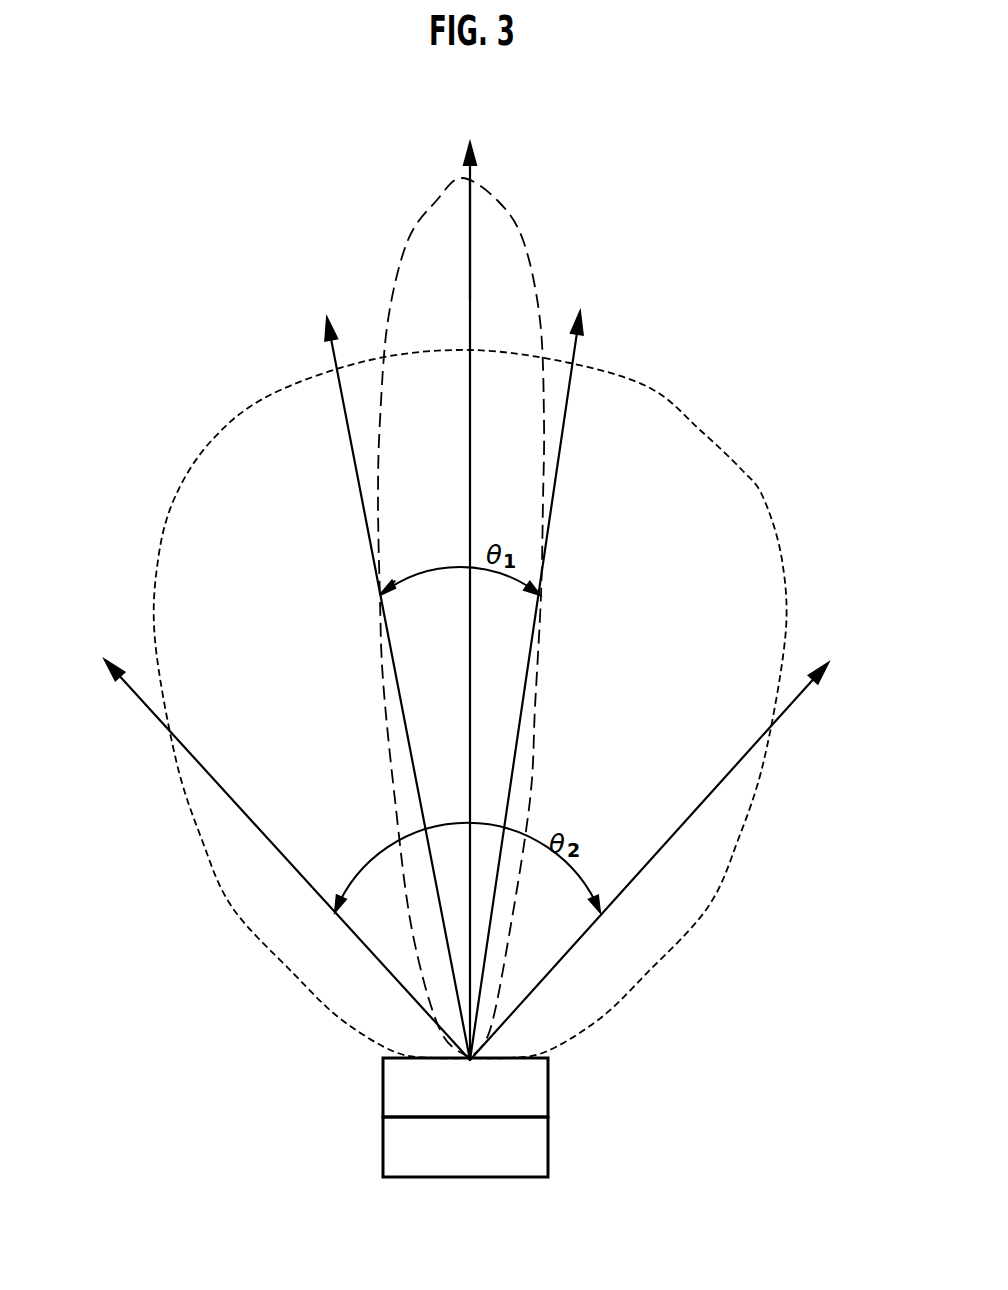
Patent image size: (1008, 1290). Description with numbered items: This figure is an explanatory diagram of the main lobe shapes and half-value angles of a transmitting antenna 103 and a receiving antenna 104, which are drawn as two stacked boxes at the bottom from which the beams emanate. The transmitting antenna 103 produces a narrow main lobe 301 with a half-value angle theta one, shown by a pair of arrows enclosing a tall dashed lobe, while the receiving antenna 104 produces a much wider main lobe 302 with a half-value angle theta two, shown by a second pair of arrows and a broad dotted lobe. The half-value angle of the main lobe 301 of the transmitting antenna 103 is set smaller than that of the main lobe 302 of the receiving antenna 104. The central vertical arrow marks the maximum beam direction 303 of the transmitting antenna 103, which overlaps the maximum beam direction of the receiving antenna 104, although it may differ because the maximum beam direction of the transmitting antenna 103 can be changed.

The transmitting antenna 103 is at (549, 1143).
The receiving antenna 104 is at (549, 1085).
The main lobe of the transmitting antenna 301 is at (534, 707).
The main lobe of the receiving antenna 302 is at (715, 880).
The maximum beam direction 303 is at (470, 242).